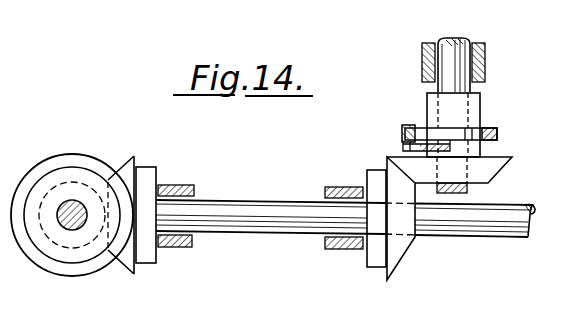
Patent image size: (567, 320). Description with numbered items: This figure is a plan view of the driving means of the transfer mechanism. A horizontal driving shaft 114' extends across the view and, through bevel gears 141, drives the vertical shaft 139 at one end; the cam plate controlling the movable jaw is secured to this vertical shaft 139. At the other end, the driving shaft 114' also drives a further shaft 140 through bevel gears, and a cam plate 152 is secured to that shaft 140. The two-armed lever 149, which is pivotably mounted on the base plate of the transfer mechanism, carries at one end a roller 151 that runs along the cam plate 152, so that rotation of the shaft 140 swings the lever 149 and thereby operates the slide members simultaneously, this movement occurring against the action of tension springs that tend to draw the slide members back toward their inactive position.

The shaft 114' is at (345, 206).
The vertical shaft 139 is at (68, 202).
The shaft 140 is at (453, 50).
The bevel gears 141 is at (128, 255).
The two-armed lever 149 is at (430, 128).
The roller 151 is at (402, 131).
The cam plate 152 is at (488, 128).